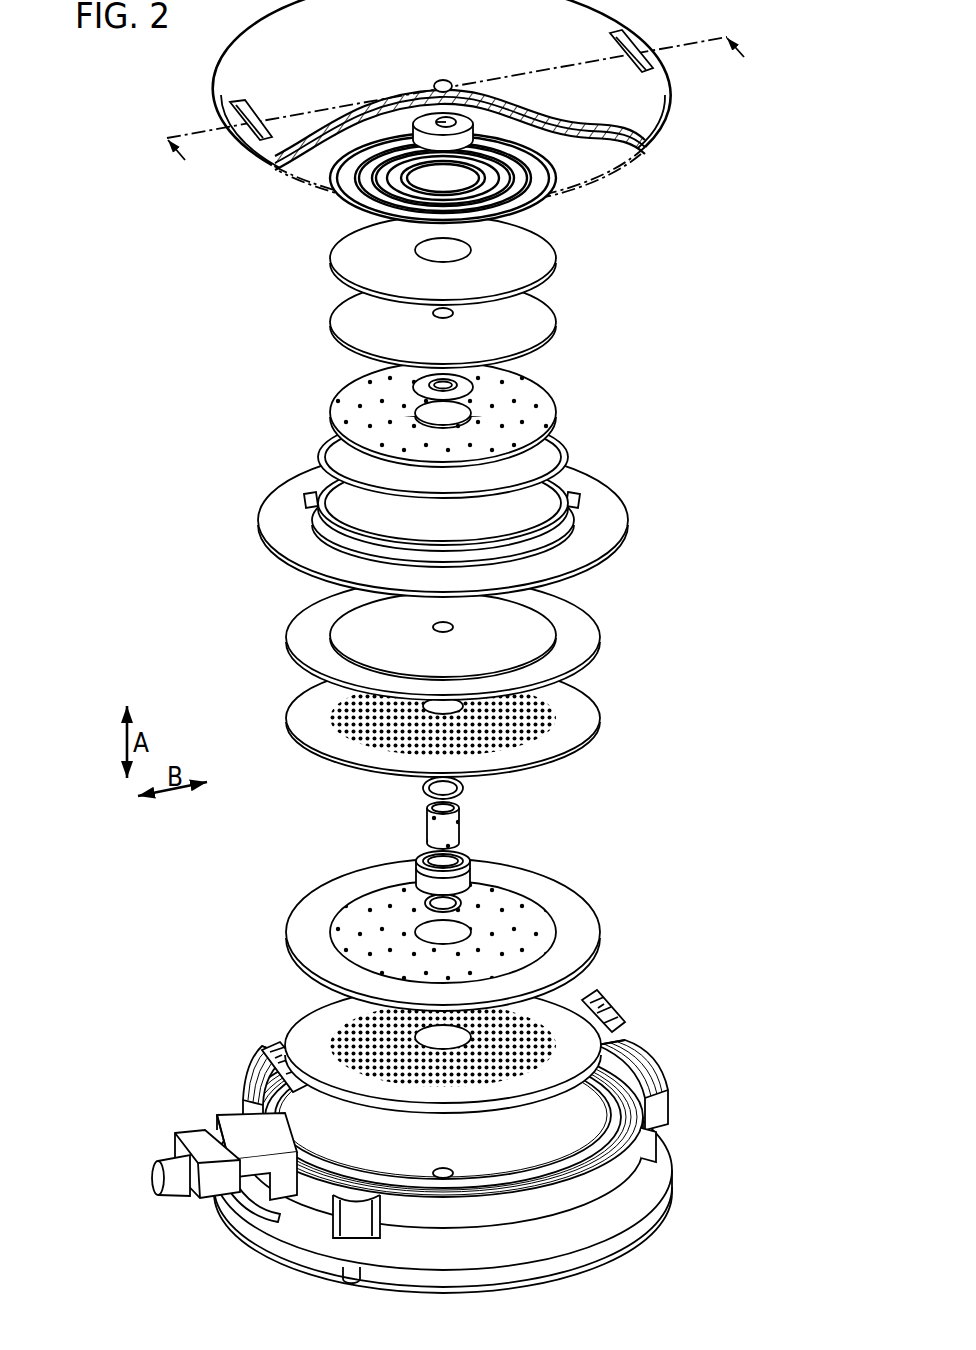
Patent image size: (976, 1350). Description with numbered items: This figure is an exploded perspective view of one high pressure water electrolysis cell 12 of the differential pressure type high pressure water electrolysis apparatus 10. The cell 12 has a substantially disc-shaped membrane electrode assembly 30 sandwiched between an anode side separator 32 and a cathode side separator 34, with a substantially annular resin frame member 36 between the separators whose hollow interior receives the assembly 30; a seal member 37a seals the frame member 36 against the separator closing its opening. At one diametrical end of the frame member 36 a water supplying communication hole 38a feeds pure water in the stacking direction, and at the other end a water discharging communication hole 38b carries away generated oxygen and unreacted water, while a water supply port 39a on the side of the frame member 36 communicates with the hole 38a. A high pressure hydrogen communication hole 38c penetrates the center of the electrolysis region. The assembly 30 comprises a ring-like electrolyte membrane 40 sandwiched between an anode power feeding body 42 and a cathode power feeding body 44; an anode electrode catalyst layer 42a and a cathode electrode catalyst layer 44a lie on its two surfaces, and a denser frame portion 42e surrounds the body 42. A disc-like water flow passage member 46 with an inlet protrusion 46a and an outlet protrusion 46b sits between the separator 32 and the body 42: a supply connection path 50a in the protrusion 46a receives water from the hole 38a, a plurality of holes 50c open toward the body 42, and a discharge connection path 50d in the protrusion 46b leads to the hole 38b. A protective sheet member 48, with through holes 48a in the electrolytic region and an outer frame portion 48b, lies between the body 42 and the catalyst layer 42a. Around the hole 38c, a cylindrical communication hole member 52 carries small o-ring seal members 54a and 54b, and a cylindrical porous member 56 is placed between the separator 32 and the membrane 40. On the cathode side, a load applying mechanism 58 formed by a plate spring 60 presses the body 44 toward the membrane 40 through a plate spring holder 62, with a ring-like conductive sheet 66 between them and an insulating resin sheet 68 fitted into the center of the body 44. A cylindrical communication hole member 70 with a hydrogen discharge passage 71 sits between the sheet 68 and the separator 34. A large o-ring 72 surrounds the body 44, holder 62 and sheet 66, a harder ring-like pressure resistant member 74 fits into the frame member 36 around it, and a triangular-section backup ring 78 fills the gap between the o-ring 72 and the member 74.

The electric apparatus 10 is at (428, 646).
The high pressure water electrolysis cell 12 is at (156, 118).
The membrane electrode assembly 30 is at (440, 865).
The anode side separator 32 is at (664, 1220).
The cathode side separator 34 is at (463, 111).
The resin frame member 36 is at (427, 1149).
The seal member 37a is at (282, 1090).
The water supplying communication hole 38a is at (240, 1196).
The water discharging communication hole 38b is at (650, 1140).
The high pressure hydrogen communication hole 38c is at (446, 631).
The water supply port 39a is at (160, 1190).
The electrolyte membrane 40 is at (441, 637).
The anode power feeding body 42 is at (471, 921).
The anode electrode catalyst layer 42a is at (352, 637).
The frame portion 42e is at (562, 893).
The cathode power feeding body 44 is at (462, 395).
The cathode electrode catalyst layer 44a is at (348, 626).
The water flow passage member 46 is at (440, 1049).
The inlet protrusion 46a is at (270, 1050).
The outlet protrusion 46b is at (618, 1020).
The protective sheet member 48 is at (480, 737).
The through holes 48a is at (536, 726).
The frame portion 48b is at (572, 722).
The supply connection path 50a is at (282, 1052).
The holes 50c is at (390, 1080).
The discharge connection path 50d is at (602, 1010).
The communication hole member 52 is at (414, 855).
The seal member 54a is at (423, 789).
The seal member 54b is at (424, 903).
The porous member 56 is at (462, 825).
The load applying mechanism 58 is at (455, 276).
The plate spring 60 is at (365, 160).
The plate spring holder 62 is at (345, 252).
The conductive sheet 66 is at (345, 318).
The resin sheet 68 is at (455, 385).
The communication hole member 70 is at (434, 89).
The hydrogen discharge passage 71 is at (425, 122).
The large o-ring 72 is at (567, 433).
The pressure resistant member 74 is at (285, 490).
The backup ring 78 is at (565, 482).